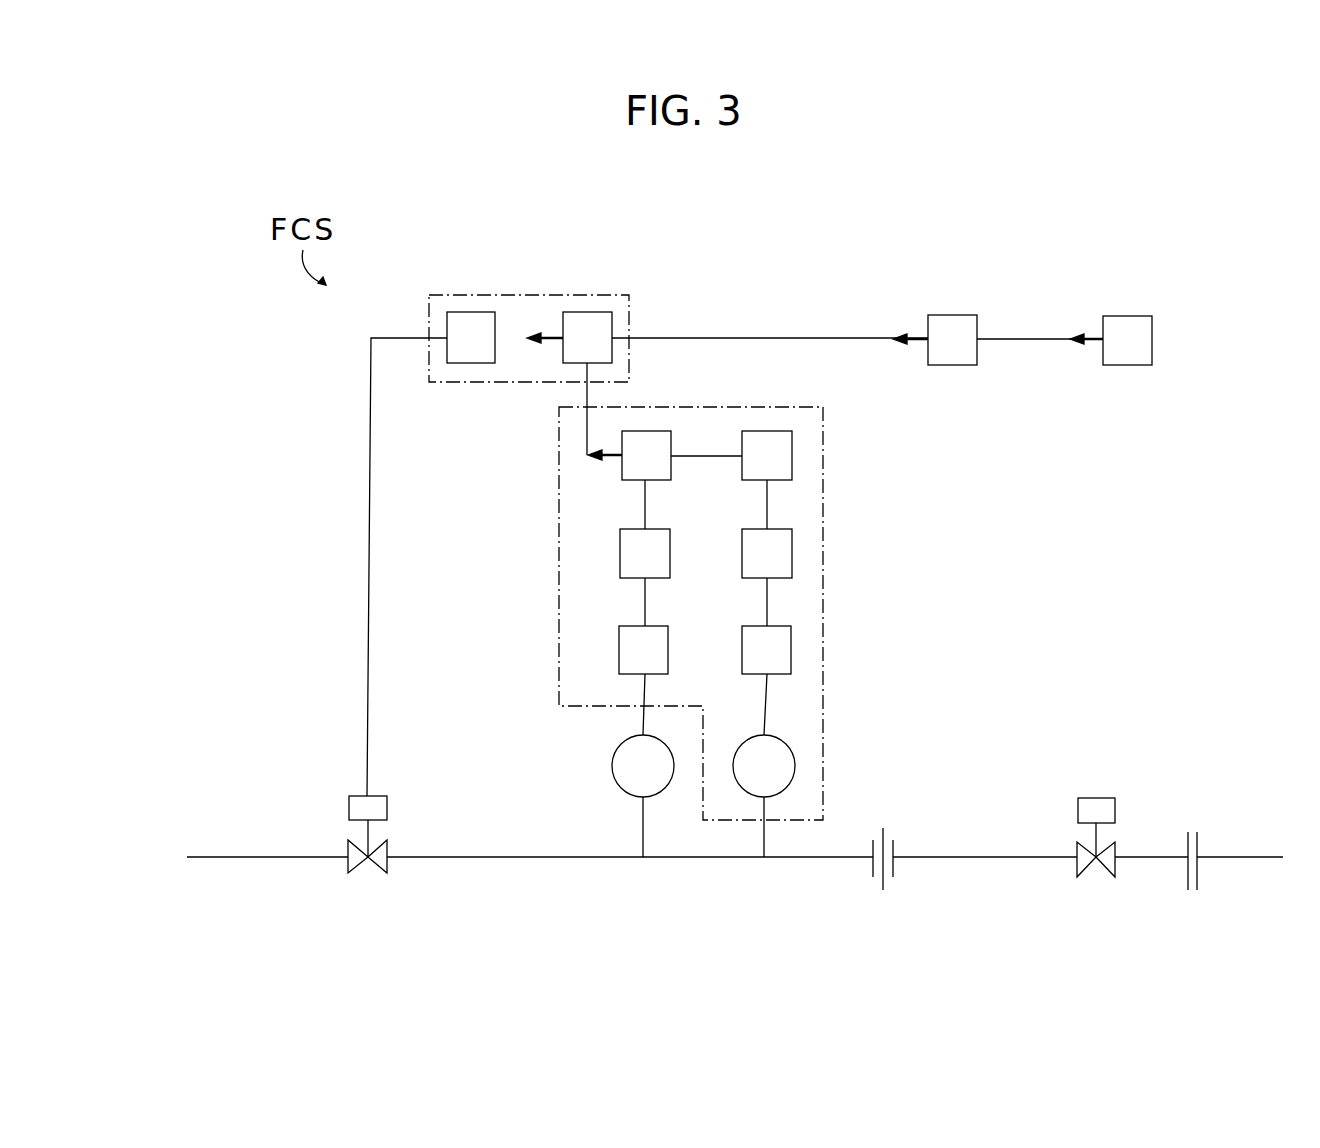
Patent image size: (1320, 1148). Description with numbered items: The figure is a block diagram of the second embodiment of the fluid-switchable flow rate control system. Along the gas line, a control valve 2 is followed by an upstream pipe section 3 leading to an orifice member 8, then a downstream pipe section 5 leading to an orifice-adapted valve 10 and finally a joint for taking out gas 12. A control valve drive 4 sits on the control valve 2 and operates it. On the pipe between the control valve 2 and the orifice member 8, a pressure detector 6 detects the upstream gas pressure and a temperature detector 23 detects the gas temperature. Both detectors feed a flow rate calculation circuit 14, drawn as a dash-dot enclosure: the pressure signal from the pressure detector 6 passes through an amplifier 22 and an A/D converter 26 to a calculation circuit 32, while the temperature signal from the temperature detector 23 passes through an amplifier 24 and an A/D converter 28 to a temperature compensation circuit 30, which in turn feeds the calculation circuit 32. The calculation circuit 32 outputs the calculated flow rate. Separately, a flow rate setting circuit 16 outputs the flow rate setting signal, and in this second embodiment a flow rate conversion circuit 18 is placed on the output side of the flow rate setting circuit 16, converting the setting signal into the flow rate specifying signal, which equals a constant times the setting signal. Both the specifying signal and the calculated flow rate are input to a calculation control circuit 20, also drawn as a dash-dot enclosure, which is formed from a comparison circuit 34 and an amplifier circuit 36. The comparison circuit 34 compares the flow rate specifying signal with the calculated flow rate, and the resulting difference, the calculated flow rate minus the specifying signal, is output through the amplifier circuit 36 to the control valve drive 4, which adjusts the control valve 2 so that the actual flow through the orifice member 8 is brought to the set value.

The control valve 2 is at (373, 872).
The upstream pipe 3 is at (529, 859).
The control valve drive 4 is at (349, 808).
The downstream pipe 5 is at (1001, 860).
The pressure detector 6 is at (612, 767).
The orifice member 8 is at (874, 880).
The orifice-adapted valve 10 is at (1090, 876).
The joint for taking out gas 12 is at (1186, 883).
The flow rate calculation circuit 14 is at (823, 703).
The flow rate setting circuit 16 is at (1125, 325).
The flow rate conversion circuit 18 is at (951, 327).
The calculation control circuit 20 is at (548, 297).
The amplifier 22 is at (633, 654).
The temperature detector 23 is at (795, 770).
The amplifier 24 is at (774, 650).
The A/D converter 26 is at (634, 557).
The A/D converter 28 is at (780, 556).
The temperature compensation circuit 30 is at (785, 458).
The calculation circuit 32 is at (651, 449).
The comparison circuit 34 is at (600, 323).
The amplifier circuit 36 is at (481, 322).